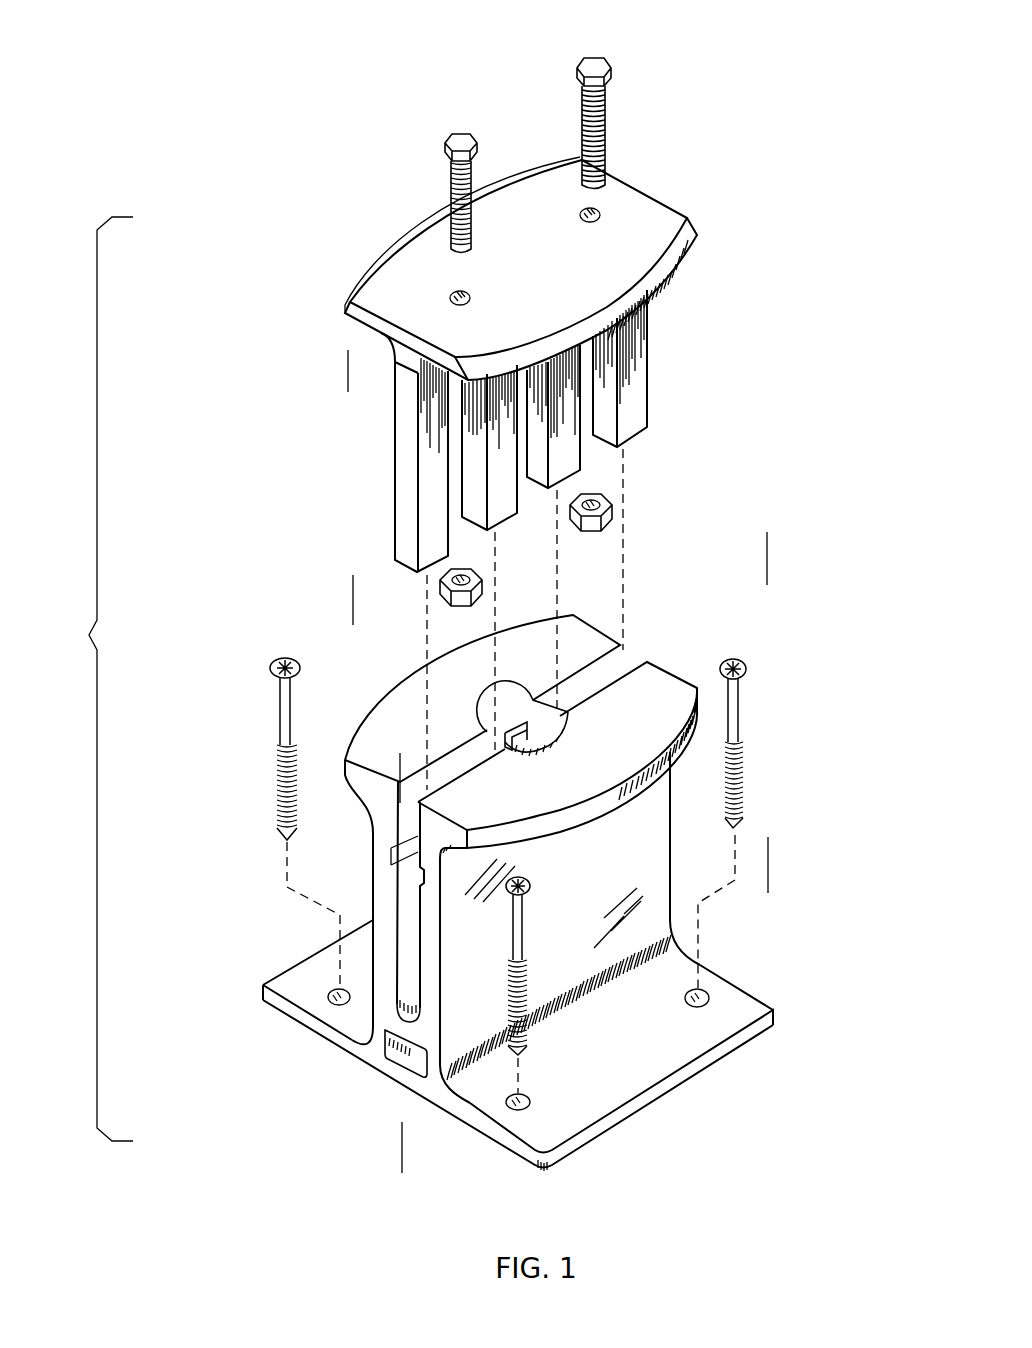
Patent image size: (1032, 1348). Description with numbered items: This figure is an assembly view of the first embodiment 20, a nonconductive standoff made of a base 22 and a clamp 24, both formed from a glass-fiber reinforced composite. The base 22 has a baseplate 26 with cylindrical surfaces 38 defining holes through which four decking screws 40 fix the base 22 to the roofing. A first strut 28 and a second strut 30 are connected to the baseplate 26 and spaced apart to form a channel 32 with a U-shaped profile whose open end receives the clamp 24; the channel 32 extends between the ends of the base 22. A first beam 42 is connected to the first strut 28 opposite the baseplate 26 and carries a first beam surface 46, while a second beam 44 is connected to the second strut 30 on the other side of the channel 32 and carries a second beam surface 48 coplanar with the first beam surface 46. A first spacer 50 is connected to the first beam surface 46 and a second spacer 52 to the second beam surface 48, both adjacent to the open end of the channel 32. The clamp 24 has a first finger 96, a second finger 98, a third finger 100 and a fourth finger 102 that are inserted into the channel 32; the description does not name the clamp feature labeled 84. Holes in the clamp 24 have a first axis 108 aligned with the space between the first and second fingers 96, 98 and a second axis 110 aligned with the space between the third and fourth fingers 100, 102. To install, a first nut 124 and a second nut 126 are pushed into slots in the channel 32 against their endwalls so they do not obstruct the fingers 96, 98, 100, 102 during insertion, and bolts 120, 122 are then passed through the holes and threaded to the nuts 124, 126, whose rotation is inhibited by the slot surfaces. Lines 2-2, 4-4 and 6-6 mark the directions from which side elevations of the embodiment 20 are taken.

The line 2- 2 is at (438, 738).
The line 4- 4 is at (730, 572).
The line 6- 6 is at (388, 332).
The first embodiment 20 is at (91, 679).
The base 22 is at (551, 871).
The clamp 24 is at (579, 473).
The baseplate 26 is at (303, 1022).
The first strut 28 is at (466, 829).
The second strut 30 is at (559, 882).
The channel 32 is at (603, 671).
The cylindrical surfaces 38 is at (345, 989).
The decking screws 40 is at (288, 651).
The first beam 42 is at (466, 724).
The second beam 44 is at (557, 765).
The first beam surface 46 is at (443, 699).
The second beam surface 48 is at (570, 776).
The first spacer 50 is at (522, 712).
The second spacer 52 is at (540, 748).
The cap plate 84 is at (367, 320).
The first finger 96 is at (398, 530).
The second finger 98 is at (504, 515).
The third finger 100 is at (551, 489).
The fourth finger 102 is at (630, 437).
The first axis 108 is at (460, 280).
The second axis 110 is at (590, 199).
The bolt 120 is at (462, 135).
The bolt 122 is at (594, 57).
The first nut 124 is at (458, 608).
The second nut 126 is at (591, 534).